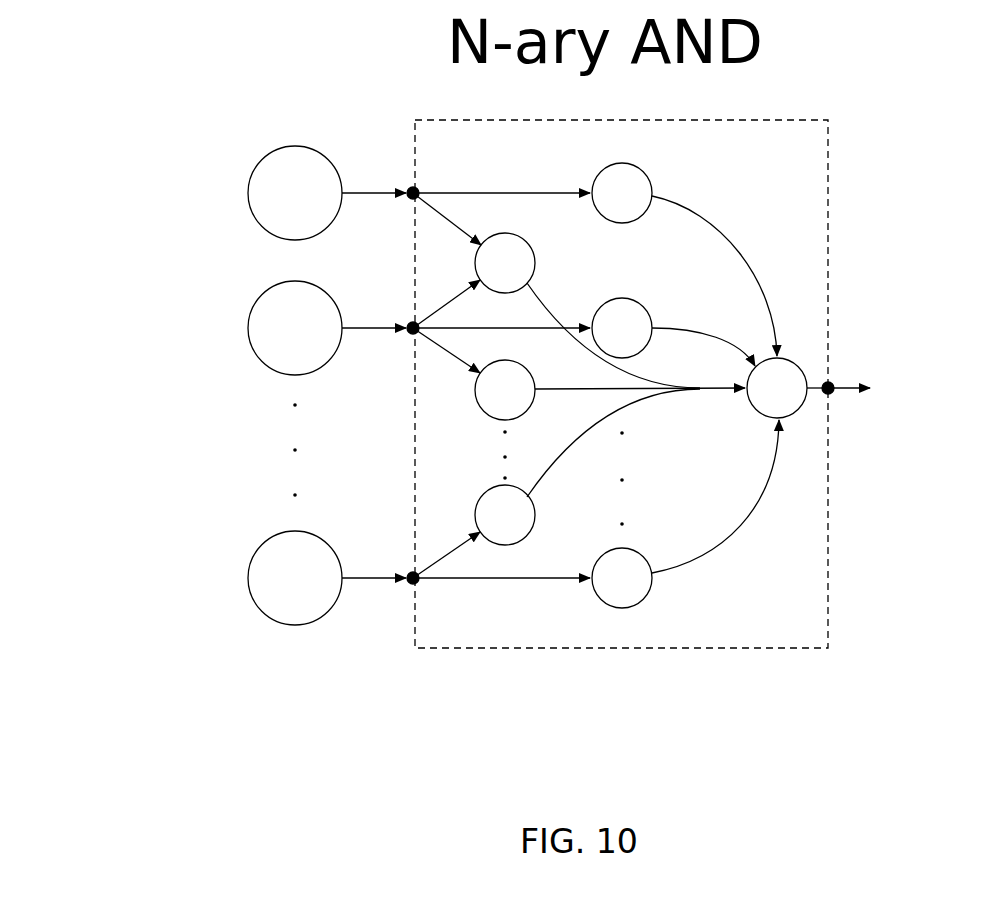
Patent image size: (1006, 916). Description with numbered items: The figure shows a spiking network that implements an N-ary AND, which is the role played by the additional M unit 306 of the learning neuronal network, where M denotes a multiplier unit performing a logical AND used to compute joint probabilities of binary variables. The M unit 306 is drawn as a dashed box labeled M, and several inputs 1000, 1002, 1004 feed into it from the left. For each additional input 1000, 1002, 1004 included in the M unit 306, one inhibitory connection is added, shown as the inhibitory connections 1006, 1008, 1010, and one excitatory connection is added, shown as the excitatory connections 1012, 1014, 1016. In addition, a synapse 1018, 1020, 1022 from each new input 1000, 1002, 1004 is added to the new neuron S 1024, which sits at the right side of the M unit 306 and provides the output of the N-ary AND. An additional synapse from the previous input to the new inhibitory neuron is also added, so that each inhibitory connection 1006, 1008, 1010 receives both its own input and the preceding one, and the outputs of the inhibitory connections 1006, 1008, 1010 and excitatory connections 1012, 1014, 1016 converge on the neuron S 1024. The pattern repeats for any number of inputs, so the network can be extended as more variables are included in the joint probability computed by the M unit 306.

The M unit 306 is at (812, 215).
The input 1000 is at (265, 168).
The input 1002 is at (262, 308).
The input 1004 is at (255, 560).
The inhibitory connection 1006 is at (527, 262).
The inhibitory connection 1008 is at (481, 404).
The inhibitory connection 1010 is at (527, 510).
The excitatory connection 1012 is at (641, 181).
The excitatory connection 1014 is at (633, 308).
The excitatory connection 1016 is at (605, 597).
The synapse 1018 is at (412, 188).
The synapse 1020 is at (412, 331).
The synapse 1022 is at (411, 582).
The neuron S 1024 is at (783, 368).